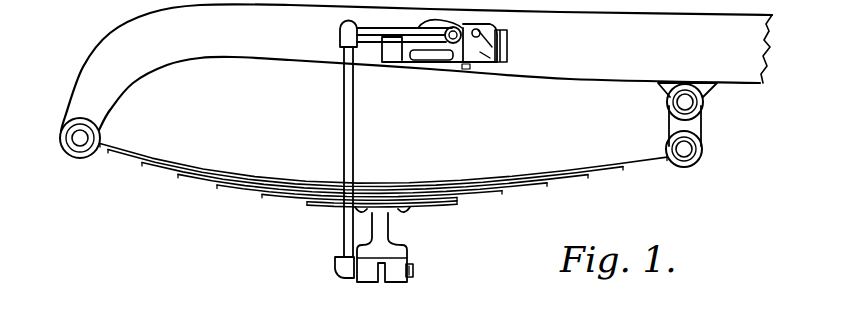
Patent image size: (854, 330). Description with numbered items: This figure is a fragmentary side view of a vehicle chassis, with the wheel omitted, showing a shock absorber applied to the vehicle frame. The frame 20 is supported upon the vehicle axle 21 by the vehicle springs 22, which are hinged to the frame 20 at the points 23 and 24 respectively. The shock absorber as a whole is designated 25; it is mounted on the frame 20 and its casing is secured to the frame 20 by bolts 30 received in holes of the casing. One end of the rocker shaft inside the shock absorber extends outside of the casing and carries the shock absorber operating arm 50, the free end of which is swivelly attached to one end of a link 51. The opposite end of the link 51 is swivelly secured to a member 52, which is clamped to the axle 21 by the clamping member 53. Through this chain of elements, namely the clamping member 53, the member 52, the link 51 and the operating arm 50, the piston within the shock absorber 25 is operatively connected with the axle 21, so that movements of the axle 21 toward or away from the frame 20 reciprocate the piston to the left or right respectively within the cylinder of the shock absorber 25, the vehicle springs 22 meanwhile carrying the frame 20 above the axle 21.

The frame 20 is at (267, 50).
The vehicle axle 21 is at (384, 228).
The vehicle springs 22 is at (470, 181).
The hinge point 23 is at (100, 146).
The hinge point 24 is at (703, 103).
The shock absorber 25 is at (510, 43).
The bolts 30 is at (483, 32).
The shock absorber operating arm 50 is at (383, 45).
The link 51 is at (343, 92).
The member 52 is at (368, 276).
The clamping member 53 is at (394, 280).